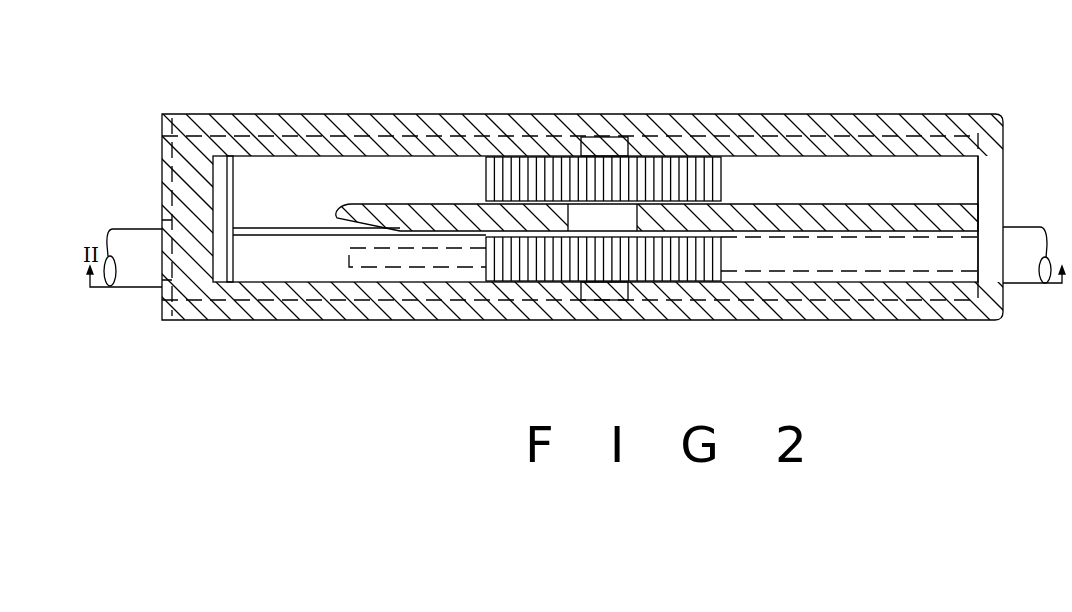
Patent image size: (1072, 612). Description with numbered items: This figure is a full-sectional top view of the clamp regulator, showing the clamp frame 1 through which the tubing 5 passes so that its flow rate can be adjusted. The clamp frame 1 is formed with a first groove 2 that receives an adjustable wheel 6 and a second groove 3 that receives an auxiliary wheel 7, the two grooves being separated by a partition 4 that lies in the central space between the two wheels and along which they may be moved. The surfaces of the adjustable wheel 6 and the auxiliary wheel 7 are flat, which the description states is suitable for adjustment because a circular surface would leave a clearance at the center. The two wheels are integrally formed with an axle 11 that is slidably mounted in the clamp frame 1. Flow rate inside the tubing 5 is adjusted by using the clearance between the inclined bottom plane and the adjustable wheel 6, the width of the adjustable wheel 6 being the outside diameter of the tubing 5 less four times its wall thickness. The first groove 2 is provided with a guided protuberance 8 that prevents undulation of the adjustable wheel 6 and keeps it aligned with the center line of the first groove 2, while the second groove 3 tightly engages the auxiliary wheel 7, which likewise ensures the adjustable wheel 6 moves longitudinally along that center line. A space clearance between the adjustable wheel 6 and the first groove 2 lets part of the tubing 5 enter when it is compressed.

The clamp frame 1 is at (720, 123).
The first groove 2 is at (954, 258).
The second groove 3 is at (960, 187).
The partition 4 is at (967, 224).
The tubing 5 is at (1027, 277).
The adjustable wheel 6 is at (721, 258).
The auxiliary wheel 7 is at (721, 184).
The guided protuberance 8 is at (867, 277).
The axle 11 is at (600, 146).